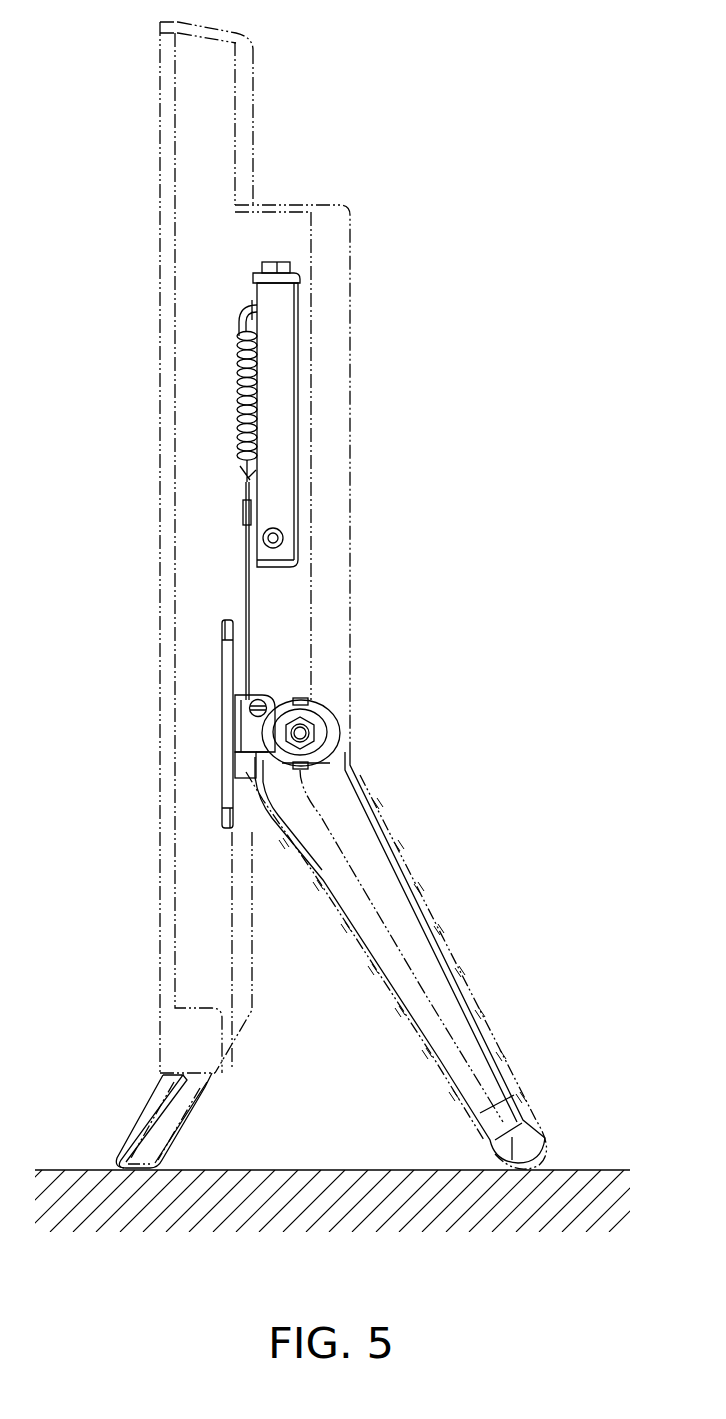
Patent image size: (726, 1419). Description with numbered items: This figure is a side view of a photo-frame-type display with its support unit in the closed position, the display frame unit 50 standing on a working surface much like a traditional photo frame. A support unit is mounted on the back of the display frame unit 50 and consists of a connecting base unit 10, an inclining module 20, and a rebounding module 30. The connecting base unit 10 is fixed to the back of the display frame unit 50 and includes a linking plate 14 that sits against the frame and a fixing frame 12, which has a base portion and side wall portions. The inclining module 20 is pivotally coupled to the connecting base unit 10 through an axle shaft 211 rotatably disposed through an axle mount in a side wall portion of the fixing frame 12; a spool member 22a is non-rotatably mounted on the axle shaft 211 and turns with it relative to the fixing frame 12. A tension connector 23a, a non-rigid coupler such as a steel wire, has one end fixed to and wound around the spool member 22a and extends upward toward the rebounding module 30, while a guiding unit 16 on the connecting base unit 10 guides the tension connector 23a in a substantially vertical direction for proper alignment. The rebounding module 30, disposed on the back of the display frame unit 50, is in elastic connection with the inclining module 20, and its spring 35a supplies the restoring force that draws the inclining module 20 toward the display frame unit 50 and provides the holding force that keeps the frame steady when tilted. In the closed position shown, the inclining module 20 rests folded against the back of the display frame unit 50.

The connecting base unit 10 is at (214, 780).
The fixing frame 12 is at (248, 727).
The linking plate 14 is at (222, 672).
The guiding unit 16 is at (263, 699).
The inclining module 20 is at (403, 880).
The spool member 22a is at (303, 698).
The axle shaft 211 is at (303, 733).
The tension connector 23a is at (246, 588).
The rebounding module 30 is at (298, 328).
The spring 35a is at (237, 390).
The display frame unit 50 is at (253, 106).